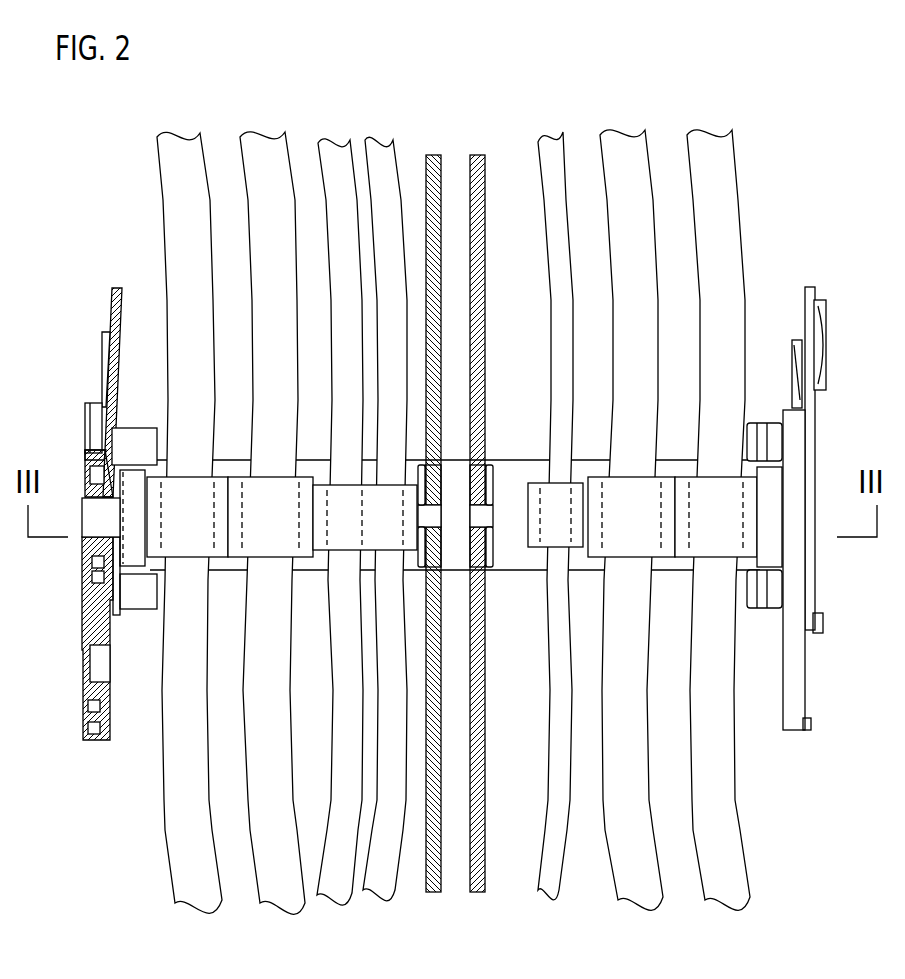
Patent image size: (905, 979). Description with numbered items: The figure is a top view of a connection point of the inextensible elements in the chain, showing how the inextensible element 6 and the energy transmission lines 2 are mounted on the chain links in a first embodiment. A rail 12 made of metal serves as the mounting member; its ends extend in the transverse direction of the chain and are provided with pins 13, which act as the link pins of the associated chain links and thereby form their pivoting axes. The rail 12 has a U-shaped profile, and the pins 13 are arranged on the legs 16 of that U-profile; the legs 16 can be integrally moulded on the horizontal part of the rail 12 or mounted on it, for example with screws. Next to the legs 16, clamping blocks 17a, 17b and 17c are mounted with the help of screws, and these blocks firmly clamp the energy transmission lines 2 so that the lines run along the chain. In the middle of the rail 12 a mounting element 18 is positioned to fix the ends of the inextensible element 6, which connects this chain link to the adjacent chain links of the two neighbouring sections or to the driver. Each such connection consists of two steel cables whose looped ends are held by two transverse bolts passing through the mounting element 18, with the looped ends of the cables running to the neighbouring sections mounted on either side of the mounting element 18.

The energy transmission lines 2 is at (267, 162).
The inextensible element 6 is at (473, 157).
The rail 12 is at (517, 447).
The pins 13 is at (91, 522).
The legs 16 is at (136, 490).
The clamping block 17a is at (452, 517).
The clamping block 17b is at (365, 517).
The clamping block 17c is at (555, 515).
The mounting element 18 is at (453, 455).